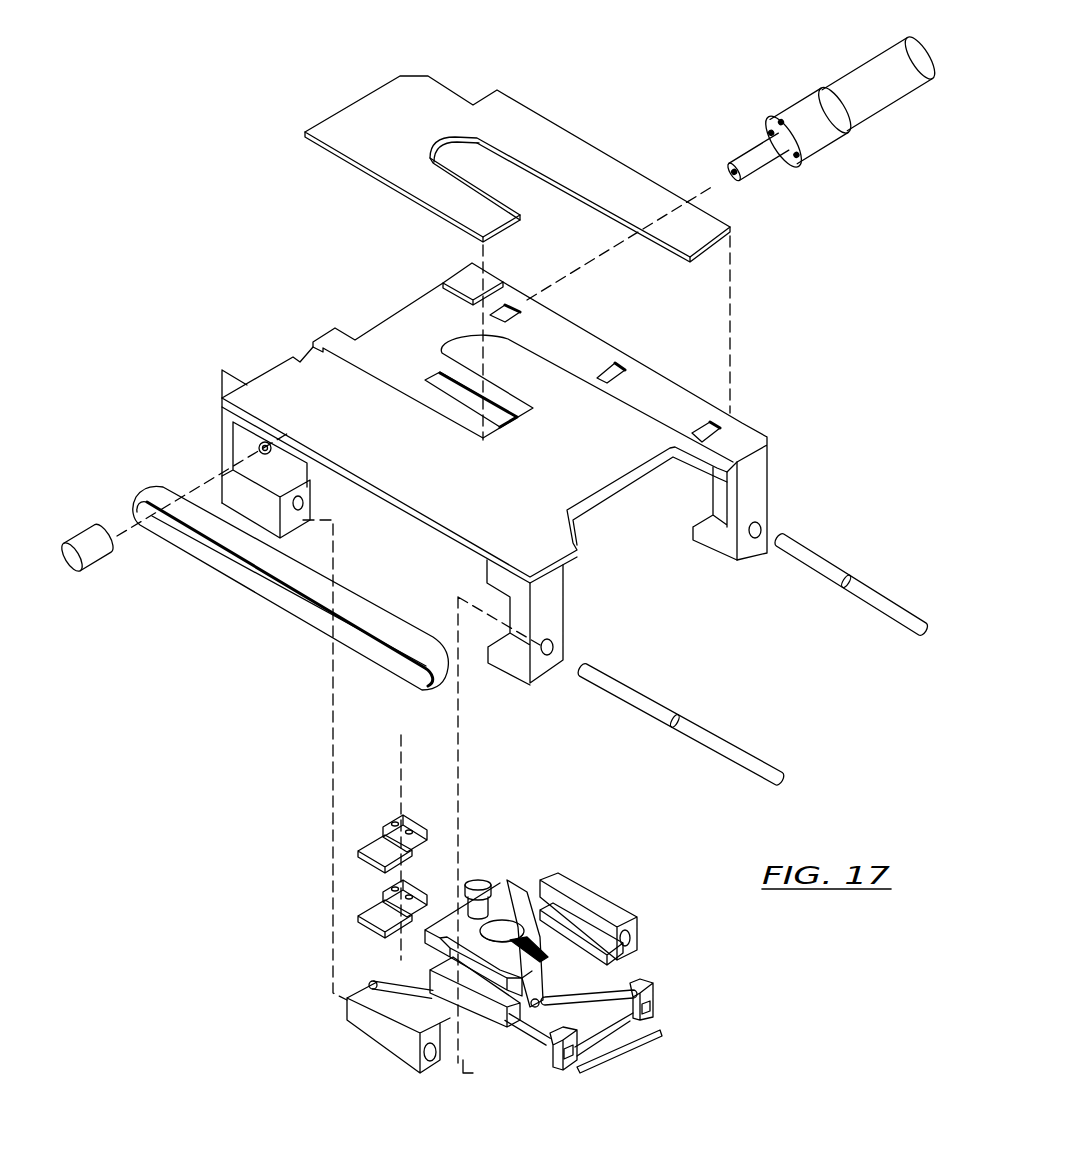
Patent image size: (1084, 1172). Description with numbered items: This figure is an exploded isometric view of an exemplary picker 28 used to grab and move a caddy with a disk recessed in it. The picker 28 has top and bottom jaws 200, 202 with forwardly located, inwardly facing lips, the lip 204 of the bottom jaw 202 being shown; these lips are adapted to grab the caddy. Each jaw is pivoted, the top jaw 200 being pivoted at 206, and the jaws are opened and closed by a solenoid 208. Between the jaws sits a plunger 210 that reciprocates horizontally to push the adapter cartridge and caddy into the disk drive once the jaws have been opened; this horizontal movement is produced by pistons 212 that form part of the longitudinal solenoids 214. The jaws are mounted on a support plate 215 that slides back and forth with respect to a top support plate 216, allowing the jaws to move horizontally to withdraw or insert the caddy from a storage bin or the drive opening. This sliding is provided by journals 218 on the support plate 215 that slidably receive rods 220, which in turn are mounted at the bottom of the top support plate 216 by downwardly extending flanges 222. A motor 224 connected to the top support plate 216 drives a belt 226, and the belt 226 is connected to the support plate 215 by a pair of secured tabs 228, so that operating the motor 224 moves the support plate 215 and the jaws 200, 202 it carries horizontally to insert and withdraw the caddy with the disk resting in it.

The picker 28 is at (567, 83).
The top jaw 200 is at (625, 1030).
The bottom jaw 202 is at (574, 1072).
The lip 204 is at (630, 1048).
The pivot 206 is at (628, 960).
The solenoid 208 is at (505, 920).
The plunger 210 is at (660, 1018).
The pistons 212 is at (628, 990).
The longitudinal solenoids 214 is at (562, 920).
The support plate 215 is at (468, 1074).
The top support plate 216 is at (275, 385).
The journals 218 is at (600, 900).
The rods 220 is at (896, 582).
The flanges 222 is at (228, 432).
The motor 224 is at (900, 101).
The belt 226 is at (192, 574).
The secured tabs 228 is at (383, 840).